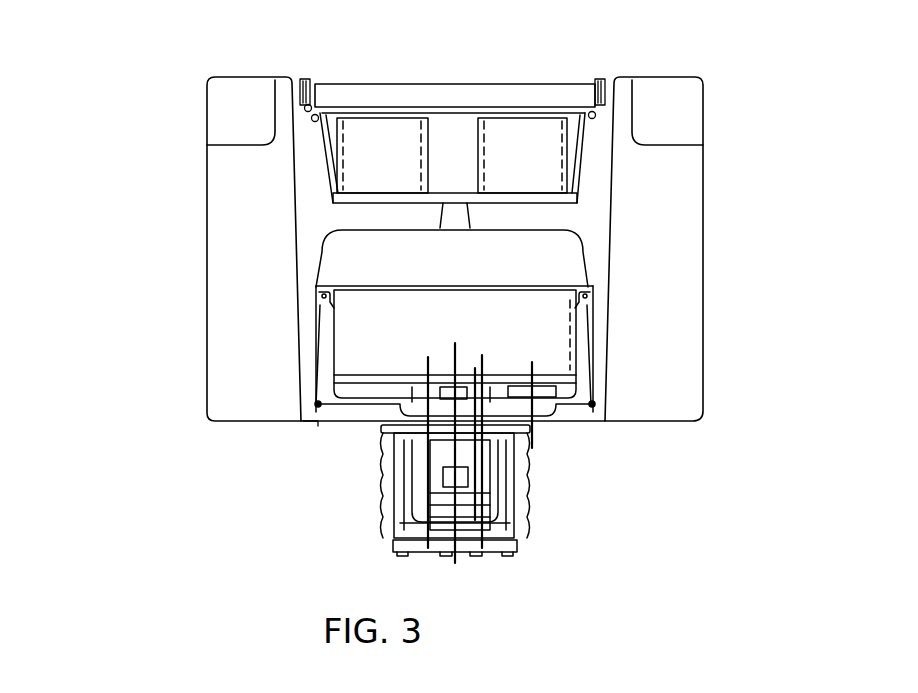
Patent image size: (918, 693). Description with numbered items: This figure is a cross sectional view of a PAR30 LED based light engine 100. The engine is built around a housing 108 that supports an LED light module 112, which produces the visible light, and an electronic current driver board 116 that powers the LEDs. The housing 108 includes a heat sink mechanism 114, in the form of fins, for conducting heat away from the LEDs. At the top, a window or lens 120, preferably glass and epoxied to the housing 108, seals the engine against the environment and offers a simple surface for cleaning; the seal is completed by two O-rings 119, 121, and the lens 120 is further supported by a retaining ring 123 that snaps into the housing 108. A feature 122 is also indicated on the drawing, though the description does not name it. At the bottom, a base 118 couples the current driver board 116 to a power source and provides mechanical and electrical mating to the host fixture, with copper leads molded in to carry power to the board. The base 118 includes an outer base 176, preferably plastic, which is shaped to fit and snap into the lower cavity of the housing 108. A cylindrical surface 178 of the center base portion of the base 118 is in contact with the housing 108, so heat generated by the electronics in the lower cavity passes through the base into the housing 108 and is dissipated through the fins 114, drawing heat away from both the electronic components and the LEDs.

The LED based light engine 100 is at (120, 387).
The housing 108 is at (704, 285).
The LED light module 112 is at (395, 142).
The heat sink mechanism 114 is at (232, 255).
The electronic current driver board 116 is at (579, 400).
The base 118 is at (333, 426).
The O-ring 119 is at (612, 112).
The lens 120 is at (476, 85).
The O-ring 121 is at (593, 120).
The cover 122 is at (362, 198).
The retaining ring 123 is at (310, 78).
The outer base 176 is at (318, 424).
The cylindrical surface 178 is at (594, 358).